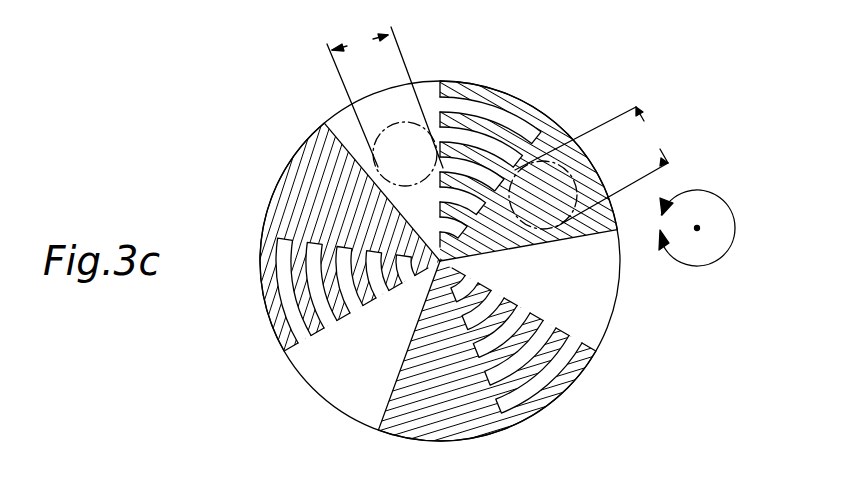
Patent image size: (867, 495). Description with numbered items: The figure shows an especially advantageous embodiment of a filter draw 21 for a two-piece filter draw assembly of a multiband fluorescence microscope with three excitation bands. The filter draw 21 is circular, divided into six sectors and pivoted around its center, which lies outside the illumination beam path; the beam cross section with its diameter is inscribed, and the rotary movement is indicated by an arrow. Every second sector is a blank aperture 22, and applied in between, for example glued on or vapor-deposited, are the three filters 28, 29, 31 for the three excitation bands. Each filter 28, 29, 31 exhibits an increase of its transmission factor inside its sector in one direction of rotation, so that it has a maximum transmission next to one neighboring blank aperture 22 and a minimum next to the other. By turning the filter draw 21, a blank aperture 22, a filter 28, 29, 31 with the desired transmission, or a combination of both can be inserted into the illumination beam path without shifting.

The filter draw 21 is at (248, 97).
The blank aperture 22 is at (372, 113).
The filter 28 is at (547, 120).
The filter 29 is at (415, 420).
The filter 31 is at (295, 178).